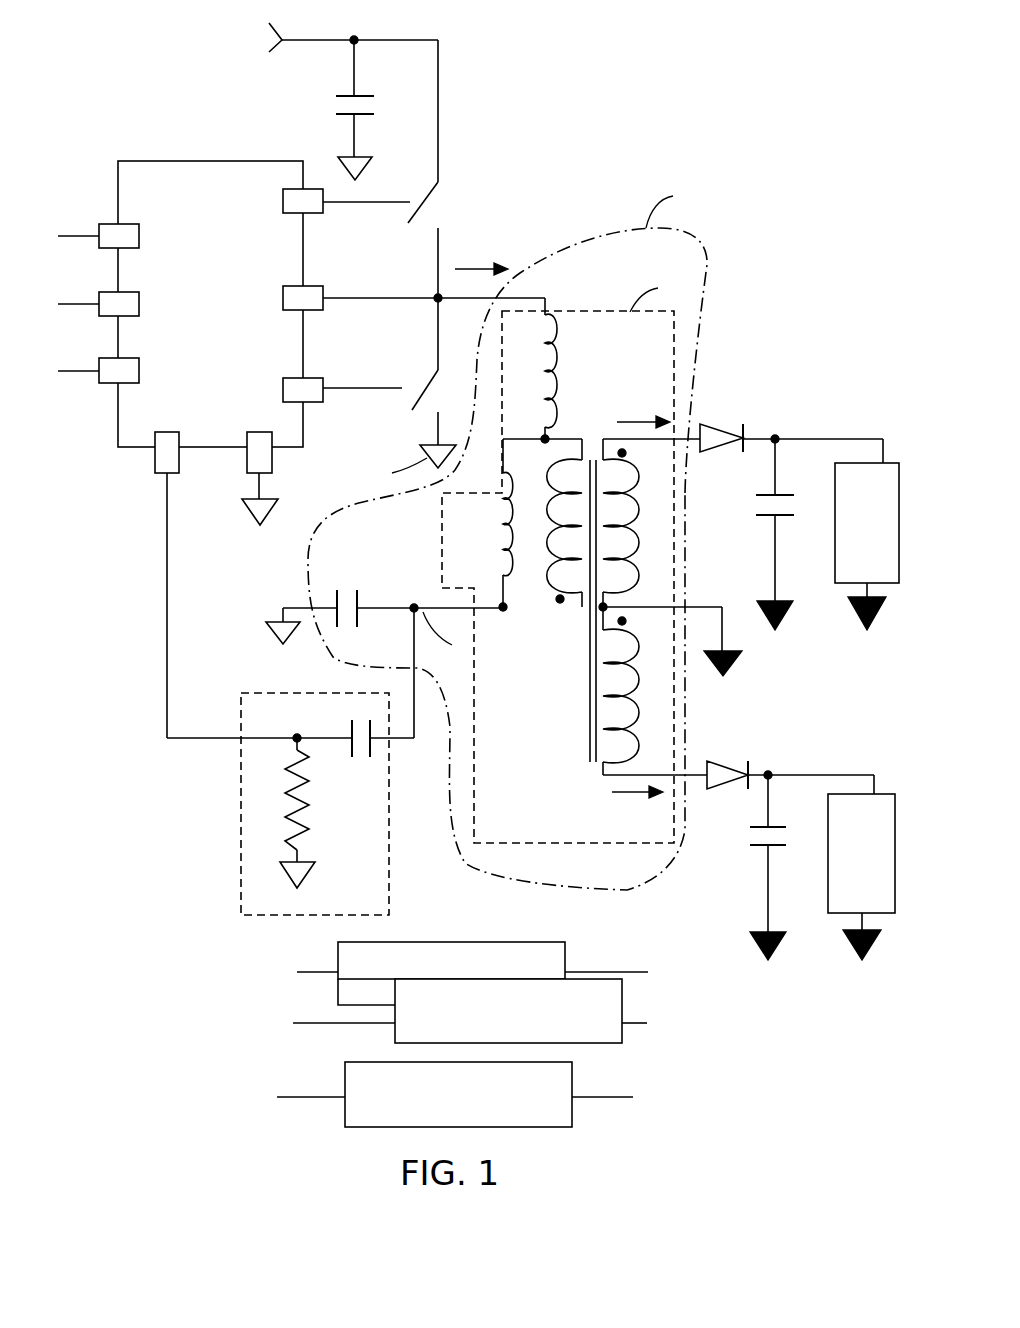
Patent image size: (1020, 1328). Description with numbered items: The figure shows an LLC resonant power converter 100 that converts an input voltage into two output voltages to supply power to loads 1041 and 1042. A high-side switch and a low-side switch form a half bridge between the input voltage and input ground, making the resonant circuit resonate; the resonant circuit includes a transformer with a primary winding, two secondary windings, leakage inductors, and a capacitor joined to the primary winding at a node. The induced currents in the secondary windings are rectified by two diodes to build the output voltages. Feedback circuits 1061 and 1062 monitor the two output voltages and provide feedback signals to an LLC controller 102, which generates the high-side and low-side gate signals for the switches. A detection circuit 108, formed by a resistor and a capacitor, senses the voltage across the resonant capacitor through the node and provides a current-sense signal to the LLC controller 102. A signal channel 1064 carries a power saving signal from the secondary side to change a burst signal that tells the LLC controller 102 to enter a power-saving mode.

The LLC resonant power converter 100 is at (505, 68).
The LLC controller 102 is at (178, 193).
The detection circuit 108 is at (265, 693).
The load 1041 is at (891, 549).
The load 1042 is at (885, 877).
The feedback circuit 1061 is at (560, 972).
The feedback circuit 1062 is at (530, 1035).
The signal channel 1064 is at (480, 1118).